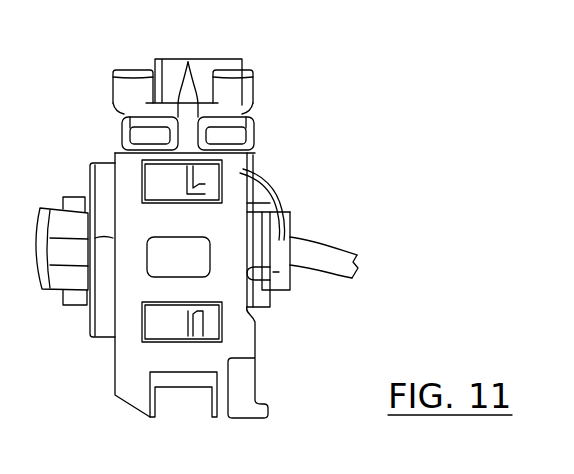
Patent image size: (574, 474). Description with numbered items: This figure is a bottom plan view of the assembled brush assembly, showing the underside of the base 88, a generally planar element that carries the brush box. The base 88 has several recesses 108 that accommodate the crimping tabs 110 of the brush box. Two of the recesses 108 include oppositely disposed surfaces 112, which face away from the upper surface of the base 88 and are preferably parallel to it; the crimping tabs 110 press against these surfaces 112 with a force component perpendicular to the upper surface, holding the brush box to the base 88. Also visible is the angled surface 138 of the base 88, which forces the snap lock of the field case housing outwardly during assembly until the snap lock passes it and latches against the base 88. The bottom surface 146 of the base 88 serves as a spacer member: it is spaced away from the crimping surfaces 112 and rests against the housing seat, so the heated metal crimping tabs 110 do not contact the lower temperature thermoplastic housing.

The base 88 is at (101, 402).
The recesses 108 is at (124, 106).
The crimping tabs 110 is at (117, 140).
The oppositely disposed surfaces 112 is at (188, 62).
The angled surface 138 is at (180, 381).
The bottom surface 146 is at (197, 229).